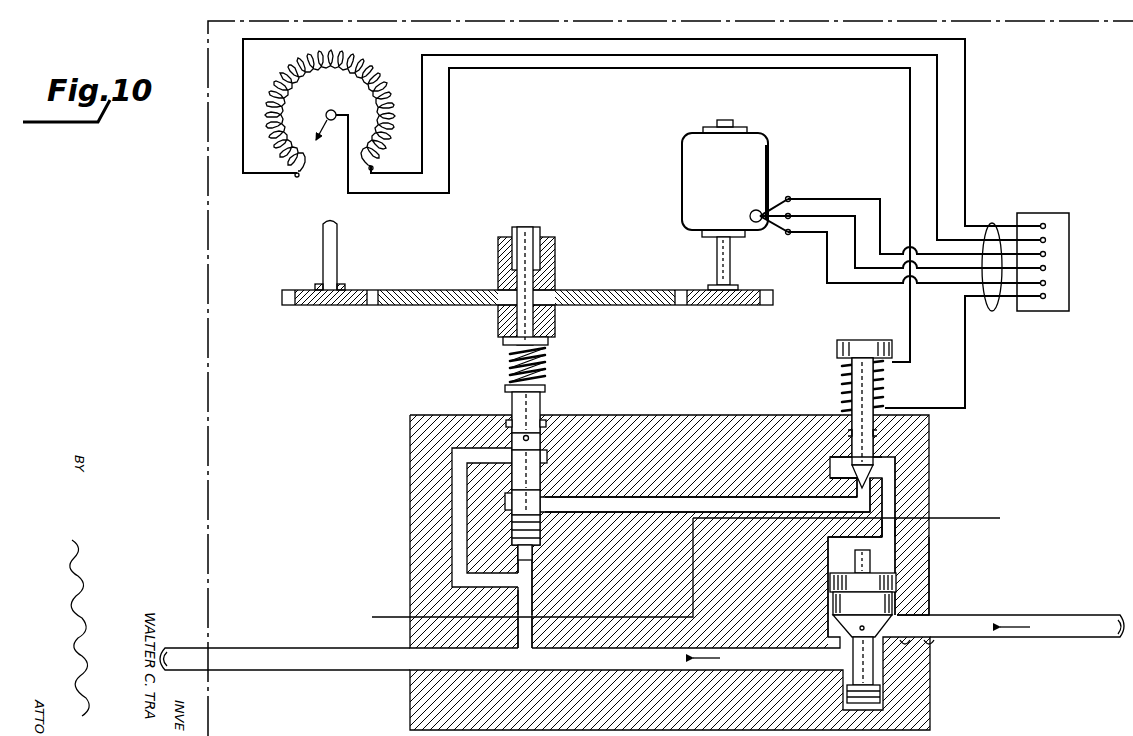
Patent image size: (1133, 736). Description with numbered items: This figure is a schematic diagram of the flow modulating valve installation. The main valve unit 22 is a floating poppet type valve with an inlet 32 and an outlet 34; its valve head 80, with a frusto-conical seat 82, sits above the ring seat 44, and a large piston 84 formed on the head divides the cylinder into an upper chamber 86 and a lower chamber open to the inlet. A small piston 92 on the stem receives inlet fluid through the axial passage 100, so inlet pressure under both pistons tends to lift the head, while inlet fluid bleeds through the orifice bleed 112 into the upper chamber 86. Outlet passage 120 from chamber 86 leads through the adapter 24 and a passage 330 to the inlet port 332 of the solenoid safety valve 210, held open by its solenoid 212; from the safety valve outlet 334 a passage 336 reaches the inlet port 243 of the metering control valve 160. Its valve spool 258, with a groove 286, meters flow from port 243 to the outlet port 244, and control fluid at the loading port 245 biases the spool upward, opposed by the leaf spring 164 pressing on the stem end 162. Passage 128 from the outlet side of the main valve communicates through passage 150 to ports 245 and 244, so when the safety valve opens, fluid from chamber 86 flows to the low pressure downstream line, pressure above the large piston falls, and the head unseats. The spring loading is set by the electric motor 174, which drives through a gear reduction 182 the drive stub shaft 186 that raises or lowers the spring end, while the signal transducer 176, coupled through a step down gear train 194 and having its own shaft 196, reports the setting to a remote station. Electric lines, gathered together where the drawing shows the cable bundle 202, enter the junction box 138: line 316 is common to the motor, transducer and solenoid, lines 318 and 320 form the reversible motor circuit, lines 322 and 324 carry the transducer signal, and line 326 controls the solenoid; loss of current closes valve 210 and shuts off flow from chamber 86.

The signal transducer 176 is at (318, 166).
The electric motor 174 is at (688, 205).
The gear reduction 182 is at (663, 306).
The junction box 138 is at (1038, 213).
The line 322 is at (1046, 226).
The line 324 is at (1046, 240).
The line 318 is at (1046, 254).
The line 316 is at (1046, 268).
The line 320 is at (1046, 283).
The line 326 is at (1040, 300).
The cable 202 is at (996, 312).
The solenoid 212 is at (884, 389).
The safety valve 210 is at (876, 452).
The transducer shaft 196 is at (323, 266).
The step down gear train 194 is at (357, 307).
The drive stub shaft 186 is at (549, 276).
The leaf spring 164 is at (548, 360).
The valve spool stem end 162 is at (513, 403).
The control valve 160 is at (556, 426).
The groove 286 is at (512, 443).
The outlet port 244 is at (490, 460).
The valve spool 258 is at (534, 474).
The inlet port 243 is at (541, 513).
The passage 336 is at (670, 499).
The inlet port 332 is at (890, 467).
The passage 330 is at (890, 497).
The outlet 334 is at (858, 493).
The adapter 24 is at (968, 521).
The passage 120 is at (890, 531).
The orifice bleed 112 is at (926, 573).
The upper chamber 86 is at (835, 545).
The piston 84 is at (896, 580).
The valve head 80 is at (894, 593).
The frusto-conical seat 82 is at (862, 614).
The main valve unit 22 is at (818, 608).
The ring seat 44 is at (885, 680).
The inlet 32 is at (1010, 641).
The small piston 92 is at (881, 694).
The axial passage 100 is at (826, 688).
The outlet 34 is at (424, 660).
The loading port 245 is at (531, 578).
The passage 150 is at (531, 600).
The passage 128 is at (531, 632).